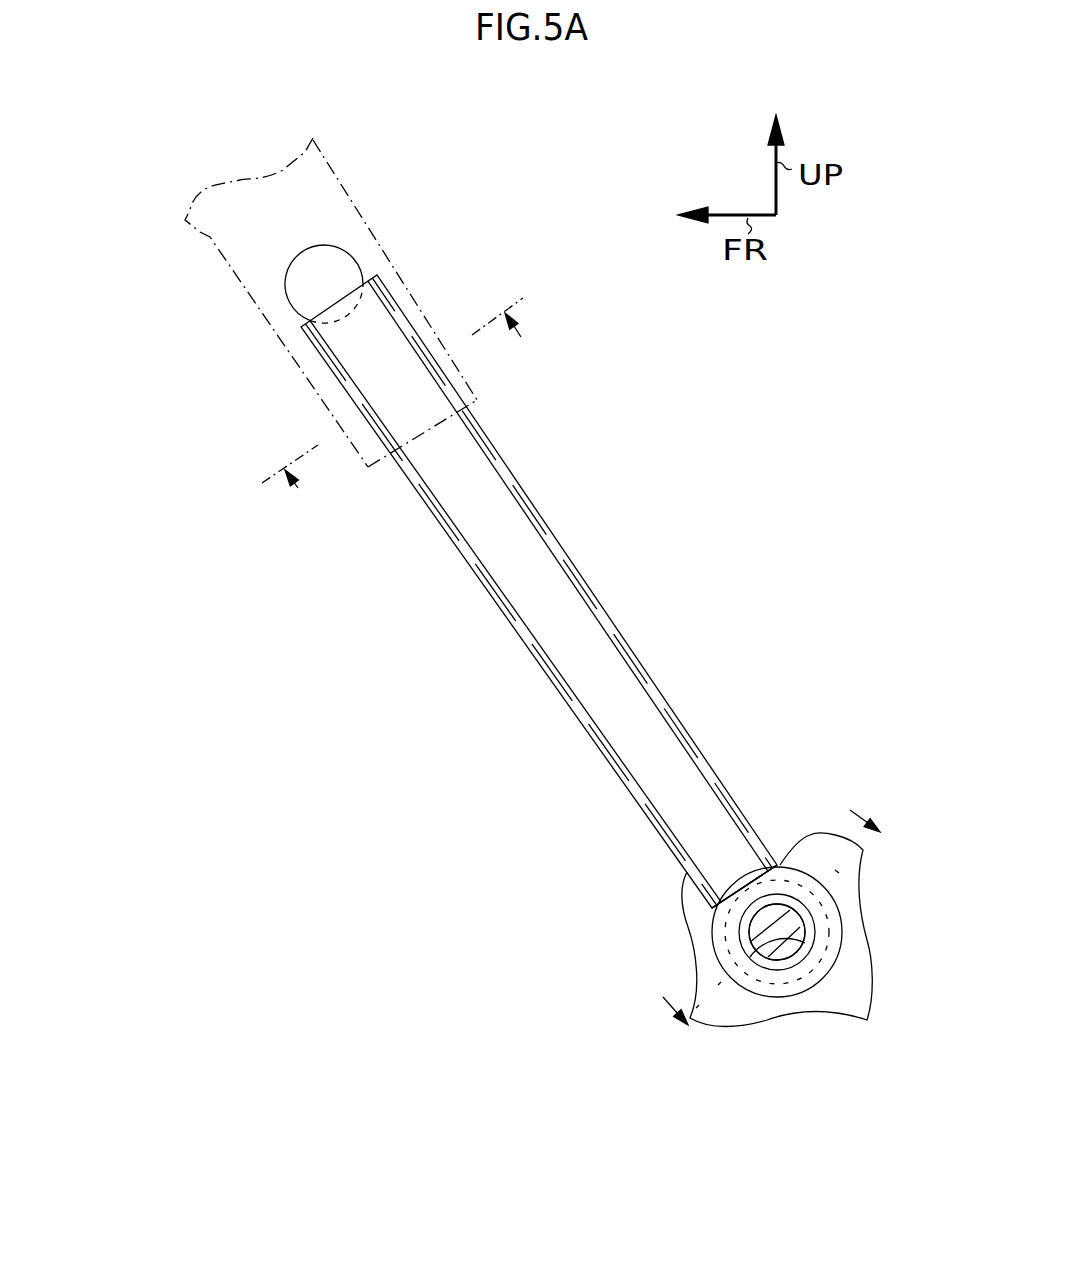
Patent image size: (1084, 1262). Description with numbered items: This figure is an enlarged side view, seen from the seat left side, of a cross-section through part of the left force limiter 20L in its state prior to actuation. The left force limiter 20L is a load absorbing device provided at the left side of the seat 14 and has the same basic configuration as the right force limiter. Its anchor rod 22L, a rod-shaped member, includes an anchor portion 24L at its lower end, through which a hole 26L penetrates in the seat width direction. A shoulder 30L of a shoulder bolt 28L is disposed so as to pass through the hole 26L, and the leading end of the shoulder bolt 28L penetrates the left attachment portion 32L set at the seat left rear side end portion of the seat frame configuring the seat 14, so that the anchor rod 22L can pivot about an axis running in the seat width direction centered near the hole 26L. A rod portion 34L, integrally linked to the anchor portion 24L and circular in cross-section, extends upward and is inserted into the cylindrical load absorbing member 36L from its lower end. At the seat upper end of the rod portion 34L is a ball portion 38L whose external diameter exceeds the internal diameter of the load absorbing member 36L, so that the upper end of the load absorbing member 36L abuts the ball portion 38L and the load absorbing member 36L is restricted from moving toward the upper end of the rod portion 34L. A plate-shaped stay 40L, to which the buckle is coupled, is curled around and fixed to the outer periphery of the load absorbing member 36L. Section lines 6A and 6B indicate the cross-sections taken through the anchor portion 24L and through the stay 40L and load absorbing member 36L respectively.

The left force limiter 20L is at (652, 560).
The anchor rod 22L is at (508, 508).
The anchor portion 24L is at (713, 922).
The hole 26L is at (753, 952).
The shoulder bolt 28L is at (788, 1008).
The shoulder 30L is at (783, 965).
The left attachment portion 32L is at (686, 893).
The seat 14 is at (649, 886).
The rod portion 34L is at (547, 642).
The load absorbing member 36L is at (488, 600).
The ball portion 38L is at (285, 292).
The stay 40L is at (229, 273).
The section line 6A is at (751, 904).
The section line 6B is at (404, 411).